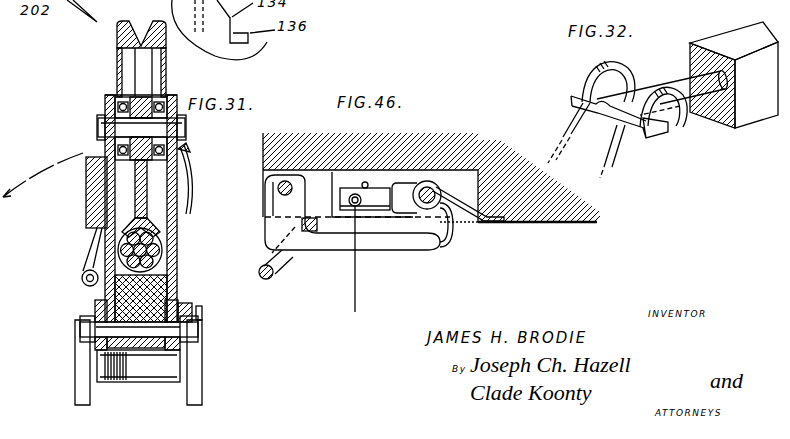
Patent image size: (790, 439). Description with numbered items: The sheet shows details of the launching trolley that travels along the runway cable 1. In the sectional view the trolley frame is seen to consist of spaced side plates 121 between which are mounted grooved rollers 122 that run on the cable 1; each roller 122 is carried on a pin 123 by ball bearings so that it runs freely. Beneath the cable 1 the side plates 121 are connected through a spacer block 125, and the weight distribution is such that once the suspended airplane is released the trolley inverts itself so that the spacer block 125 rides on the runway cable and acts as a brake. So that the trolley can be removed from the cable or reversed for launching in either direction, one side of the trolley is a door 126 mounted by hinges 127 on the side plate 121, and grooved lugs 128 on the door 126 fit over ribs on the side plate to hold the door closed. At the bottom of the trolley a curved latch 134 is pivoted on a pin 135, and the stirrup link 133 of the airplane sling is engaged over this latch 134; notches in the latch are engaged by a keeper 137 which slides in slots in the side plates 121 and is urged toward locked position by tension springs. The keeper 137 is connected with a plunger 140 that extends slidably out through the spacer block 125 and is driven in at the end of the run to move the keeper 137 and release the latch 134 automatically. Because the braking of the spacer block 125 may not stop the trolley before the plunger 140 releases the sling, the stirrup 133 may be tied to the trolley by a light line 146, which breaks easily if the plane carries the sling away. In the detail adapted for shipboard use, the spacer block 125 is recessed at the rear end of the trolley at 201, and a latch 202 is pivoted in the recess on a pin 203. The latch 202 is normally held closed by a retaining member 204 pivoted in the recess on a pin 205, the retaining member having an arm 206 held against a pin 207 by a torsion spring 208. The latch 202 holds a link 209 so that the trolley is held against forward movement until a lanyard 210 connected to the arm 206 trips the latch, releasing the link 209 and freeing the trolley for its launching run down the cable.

In FIG. 31, the cable 1 is at (163, 254).
In FIG. 31, the side plates 121 is at (105, 96).
In FIG. 31, the grooved rollers 122 is at (137, 43).
In FIG. 31, the pins 123 is at (98, 128).
In FIG. 31, the spacer block 125 is at (176, 278).
In FIG. 46, the spacer block 125 is at (553, 213).
In FIG. 32, the spacer block 125 is at (746, 110).
In FIG. 31, the door 126 is at (107, 238).
In FIG. 31, the hinges 127 is at (81, 283).
In FIG. 31, the grooved lugs 128 is at (89, 188).
In FIG. 31, the stirrup link 133 is at (192, 385).
In FIG. 31, the curved latch 134 is at (97, 378).
In FIG. 32, the curved latch 134 is at (640, 160).
In FIG. 31, the pin 135 is at (200, 327).
In FIG. 31, the keeper 137 is at (189, 310).
In FIG. 32, the keeper 137 is at (576, 98).
In FIG. 32, the plunger 140 is at (693, 93).
In FIG. 31, the light line 146 is at (189, 202).
In FIG. 46, the recess 201 is at (466, 221).
In FIG. 46, the latch 202 is at (337, 242).
In FIG. 46, the pin 203 is at (280, 194).
In FIG. 46, the retaining member 204 is at (441, 233).
In FIG. 46, the pin 205 is at (428, 192).
In FIG. 46, the arm 206 is at (383, 190).
In FIG. 46, the pin 207 is at (362, 184).
In FIG. 46, the torsion spring 208 is at (485, 172).
In FIG. 46, the link 209 is at (276, 254).
In FIG. 46, the lanyard 210 is at (374, 253).